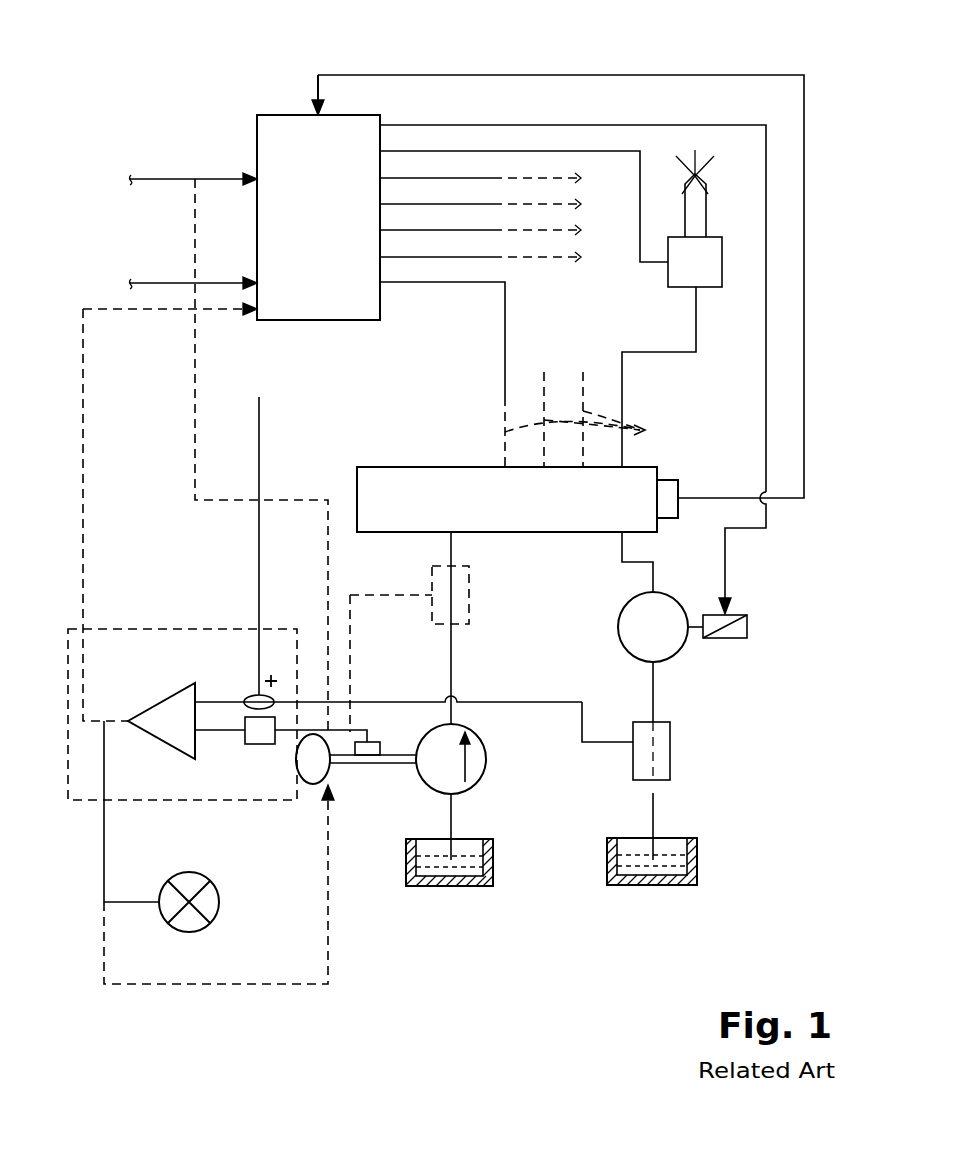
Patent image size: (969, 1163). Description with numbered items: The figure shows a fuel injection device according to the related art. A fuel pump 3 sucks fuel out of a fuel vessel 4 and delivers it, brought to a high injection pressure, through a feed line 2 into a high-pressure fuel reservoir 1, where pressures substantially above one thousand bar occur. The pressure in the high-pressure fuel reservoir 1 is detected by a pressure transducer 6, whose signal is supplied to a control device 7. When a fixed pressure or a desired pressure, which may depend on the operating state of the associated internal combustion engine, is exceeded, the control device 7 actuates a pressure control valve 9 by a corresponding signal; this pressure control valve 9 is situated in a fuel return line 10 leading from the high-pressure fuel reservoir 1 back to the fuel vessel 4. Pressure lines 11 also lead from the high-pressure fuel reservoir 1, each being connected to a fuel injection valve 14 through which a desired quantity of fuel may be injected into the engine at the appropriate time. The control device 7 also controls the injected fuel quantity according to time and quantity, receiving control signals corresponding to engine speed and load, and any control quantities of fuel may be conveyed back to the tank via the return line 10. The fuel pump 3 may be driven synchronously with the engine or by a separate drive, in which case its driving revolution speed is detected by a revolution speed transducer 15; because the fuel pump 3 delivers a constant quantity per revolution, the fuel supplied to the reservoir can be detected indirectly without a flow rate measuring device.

The high-pressure fuel reservoir 1 is at (550, 532).
The feed line 2 is at (451, 637).
The fuel pump 3 is at (486, 759).
The fuel vessel 4 is at (493, 862).
The pressure transducer 6 is at (668, 480).
The control device 7 is at (268, 114).
The pressure control valve 9 is at (618, 628).
The fuel return line 10 is at (653, 705).
The pressure lines 11 is at (696, 318).
The fuel injection valve 14 is at (715, 237).
The revolution speed transducer 15 is at (367, 755).